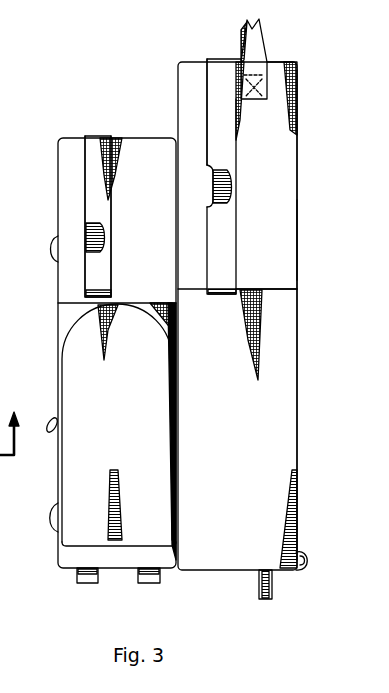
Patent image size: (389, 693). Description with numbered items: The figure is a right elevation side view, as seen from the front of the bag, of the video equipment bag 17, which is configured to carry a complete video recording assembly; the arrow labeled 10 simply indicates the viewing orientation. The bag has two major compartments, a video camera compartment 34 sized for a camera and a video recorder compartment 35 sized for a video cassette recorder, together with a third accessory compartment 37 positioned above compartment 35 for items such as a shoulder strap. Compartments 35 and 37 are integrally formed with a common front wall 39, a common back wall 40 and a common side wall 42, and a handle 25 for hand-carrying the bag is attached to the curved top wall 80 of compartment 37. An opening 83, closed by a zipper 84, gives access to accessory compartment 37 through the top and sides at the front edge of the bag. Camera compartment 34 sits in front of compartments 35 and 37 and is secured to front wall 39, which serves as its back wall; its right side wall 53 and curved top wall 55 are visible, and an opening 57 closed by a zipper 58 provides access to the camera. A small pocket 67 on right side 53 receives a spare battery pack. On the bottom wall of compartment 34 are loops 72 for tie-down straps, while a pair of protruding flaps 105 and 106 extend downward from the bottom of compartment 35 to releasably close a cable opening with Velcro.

The direction of insertion 10 is at (13, 421).
The video equipment bag 17 is at (123, 94).
The handle 25 is at (263, 41).
The video camera compartment 34 is at (63, 319).
The video recorder compartment 35 is at (278, 372).
The accessory compartment 37 is at (272, 135).
The common front wall 39 is at (178, 92).
The common back wall 40 is at (298, 232).
The common side wall 42 is at (272, 252).
The right side wall 53 is at (125, 207).
The curved top wall 55 is at (128, 137).
The opening 57 is at (84, 205).
The zipper 58 is at (88, 238).
The pocket 67 is at (77, 378).
The loops 72 is at (143, 583).
The curved top wall 80 is at (283, 66).
The opening 83 is at (207, 130).
The zipper 84 is at (213, 183).
The protruding flap 105 is at (272, 582).
The protruding flap 106 is at (259, 582).